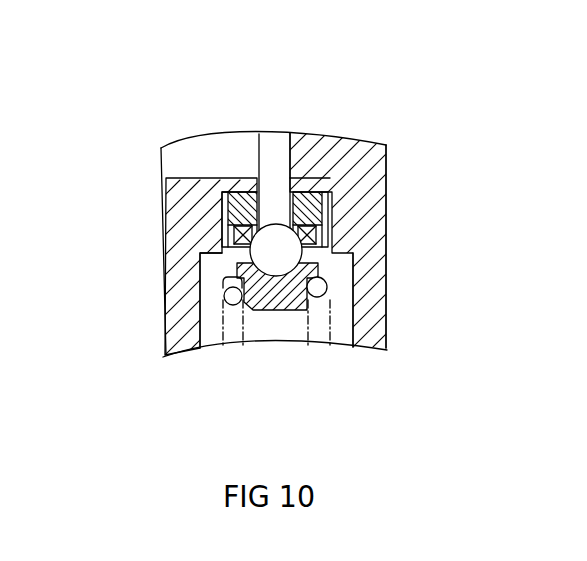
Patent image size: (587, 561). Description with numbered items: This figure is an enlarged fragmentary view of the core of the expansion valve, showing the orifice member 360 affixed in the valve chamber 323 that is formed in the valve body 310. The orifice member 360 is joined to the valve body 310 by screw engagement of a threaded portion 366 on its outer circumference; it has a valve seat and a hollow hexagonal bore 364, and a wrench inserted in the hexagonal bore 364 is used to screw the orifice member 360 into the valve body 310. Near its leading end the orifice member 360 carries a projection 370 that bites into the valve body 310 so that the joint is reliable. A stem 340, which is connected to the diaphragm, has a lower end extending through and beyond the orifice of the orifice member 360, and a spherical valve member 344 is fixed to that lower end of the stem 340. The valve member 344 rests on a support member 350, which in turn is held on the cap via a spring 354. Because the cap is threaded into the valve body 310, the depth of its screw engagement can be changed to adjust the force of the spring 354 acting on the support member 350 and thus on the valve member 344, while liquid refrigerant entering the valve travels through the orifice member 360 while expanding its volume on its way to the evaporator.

The valve body 310 is at (372, 290).
The valve chamber 323 is at (330, 338).
The stem 340 is at (270, 153).
The valve member 344 is at (275, 252).
The support member 350 is at (275, 305).
The spring 354 is at (320, 290).
The orifice member 360 is at (338, 203).
The hexagonal bore 364 is at (223, 254).
The threaded portion 366 is at (224, 237).
The projection 370 is at (243, 192).